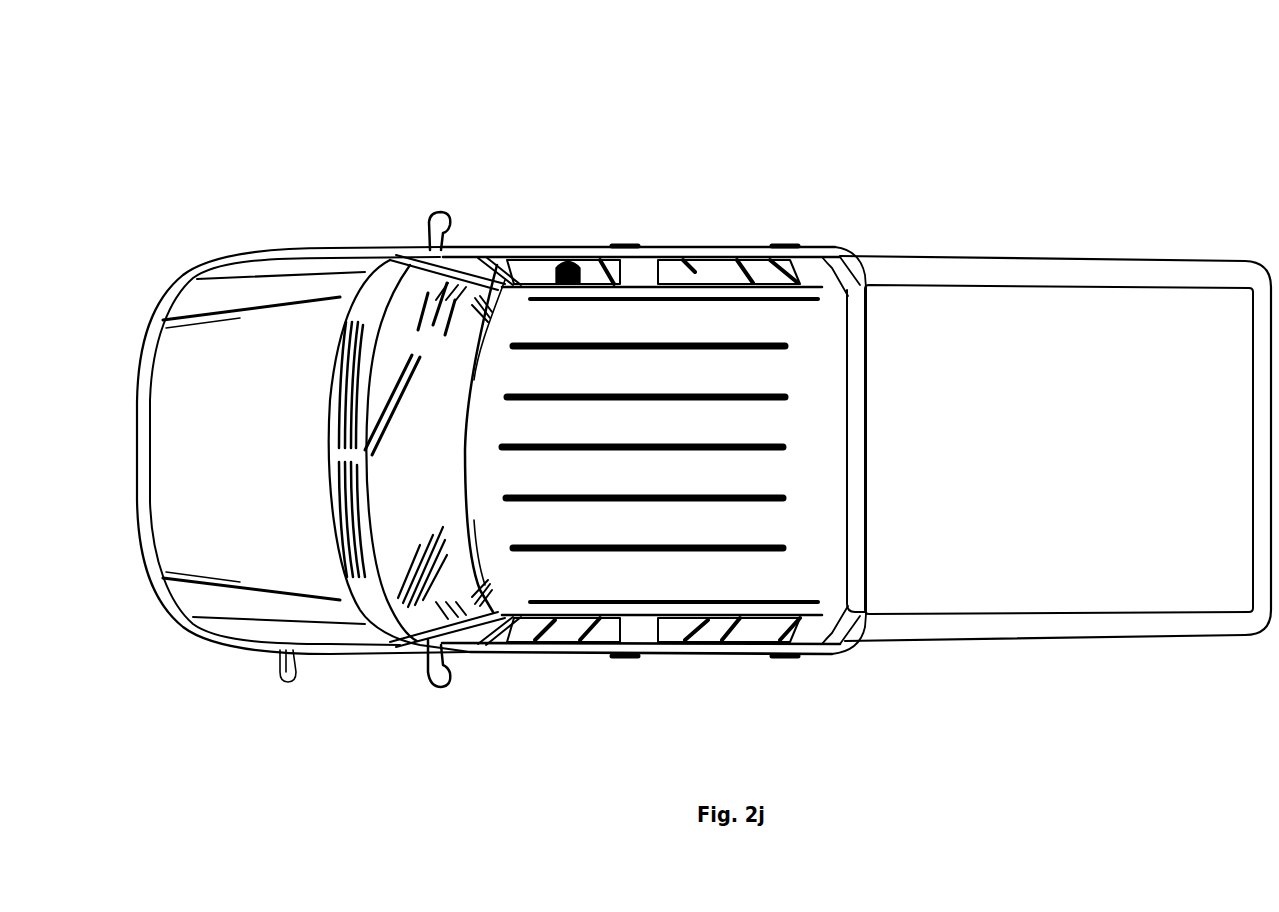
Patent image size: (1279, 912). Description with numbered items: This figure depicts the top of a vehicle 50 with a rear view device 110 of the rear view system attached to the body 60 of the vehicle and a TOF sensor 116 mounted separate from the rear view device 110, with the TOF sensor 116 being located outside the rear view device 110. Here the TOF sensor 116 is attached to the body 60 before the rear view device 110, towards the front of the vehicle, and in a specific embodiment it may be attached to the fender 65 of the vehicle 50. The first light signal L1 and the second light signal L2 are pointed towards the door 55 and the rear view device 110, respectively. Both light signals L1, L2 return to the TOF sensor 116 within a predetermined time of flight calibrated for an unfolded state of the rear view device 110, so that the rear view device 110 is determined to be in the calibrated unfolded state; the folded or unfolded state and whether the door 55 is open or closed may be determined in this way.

The vehicle 50 is at (1172, 93).
The door 55 is at (963, 171).
The body 60 is at (1055, 443).
The fender 65 is at (222, 637).
The rear view device 110 is at (432, 246).
The TOF sensor 116 is at (275, 668).
The first light signal L1 is at (493, 235).
The second light signal L2 is at (710, 235).